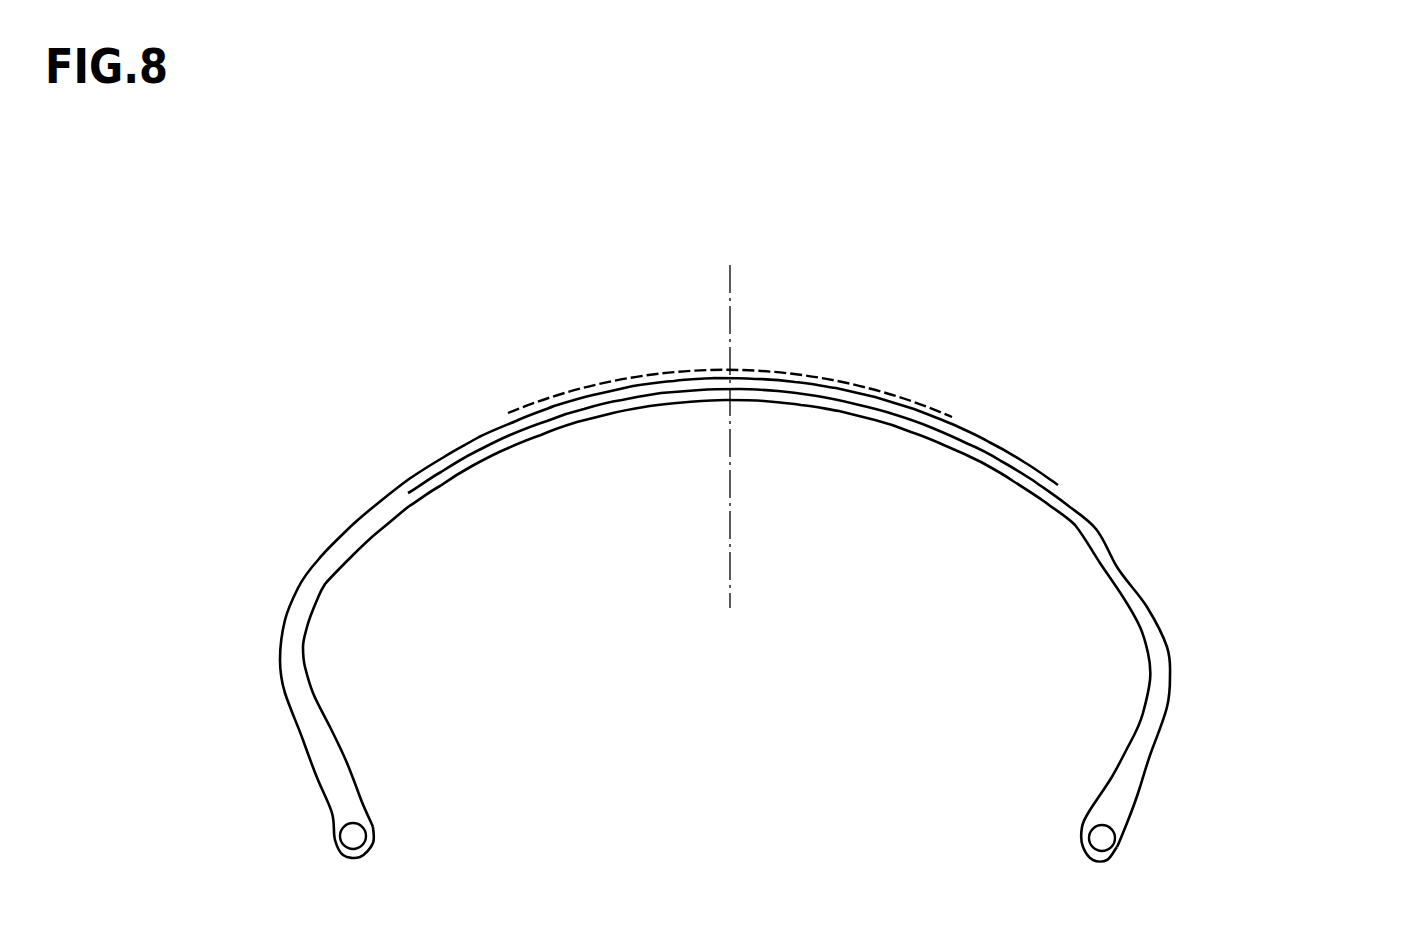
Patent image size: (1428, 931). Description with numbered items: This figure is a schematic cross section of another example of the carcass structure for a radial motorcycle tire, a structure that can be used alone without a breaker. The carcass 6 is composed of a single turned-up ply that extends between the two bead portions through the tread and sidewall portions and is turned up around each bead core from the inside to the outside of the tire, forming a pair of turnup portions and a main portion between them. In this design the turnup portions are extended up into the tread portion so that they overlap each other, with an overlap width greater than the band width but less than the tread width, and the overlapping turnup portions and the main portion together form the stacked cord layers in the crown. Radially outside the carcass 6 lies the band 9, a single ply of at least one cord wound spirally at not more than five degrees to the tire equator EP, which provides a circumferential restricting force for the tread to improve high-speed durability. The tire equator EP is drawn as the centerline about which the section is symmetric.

The band 9 is at (550, 398).
The carcass 6 is at (847, 595).
The tire equator EP is at (728, 459).